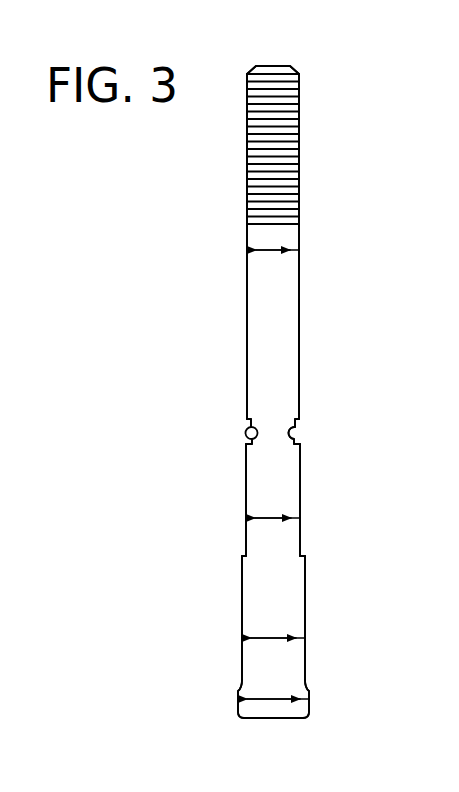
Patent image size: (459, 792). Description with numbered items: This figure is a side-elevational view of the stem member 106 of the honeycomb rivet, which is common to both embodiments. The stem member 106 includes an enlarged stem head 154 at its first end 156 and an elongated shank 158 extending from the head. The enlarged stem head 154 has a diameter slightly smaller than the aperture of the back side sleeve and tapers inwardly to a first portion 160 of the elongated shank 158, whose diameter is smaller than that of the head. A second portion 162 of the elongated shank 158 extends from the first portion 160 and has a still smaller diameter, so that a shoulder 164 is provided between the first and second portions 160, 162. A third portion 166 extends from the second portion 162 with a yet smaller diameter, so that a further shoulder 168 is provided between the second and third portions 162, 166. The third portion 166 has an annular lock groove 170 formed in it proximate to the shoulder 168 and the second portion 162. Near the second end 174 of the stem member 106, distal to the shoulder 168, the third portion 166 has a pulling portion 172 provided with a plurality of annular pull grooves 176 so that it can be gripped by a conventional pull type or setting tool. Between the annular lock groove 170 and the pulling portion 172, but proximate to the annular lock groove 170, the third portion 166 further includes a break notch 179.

The stem member 106 is at (199, 372).
The enlarged stem head 154 is at (302, 690).
The first end 156 is at (288, 718).
The elongated shank 158 is at (293, 295).
The first portion 160 is at (297, 592).
The second portion 162 is at (288, 472).
The shoulder 164 is at (302, 555).
The third portion 166 is at (293, 338).
The shoulder 168 is at (295, 443).
The annular lock groove 170 is at (257, 433).
The pulling portion 172 is at (300, 173).
The second end 174 is at (270, 65).
The annular pull grooves 176 is at (300, 108).
The break notch 179 is at (296, 420).